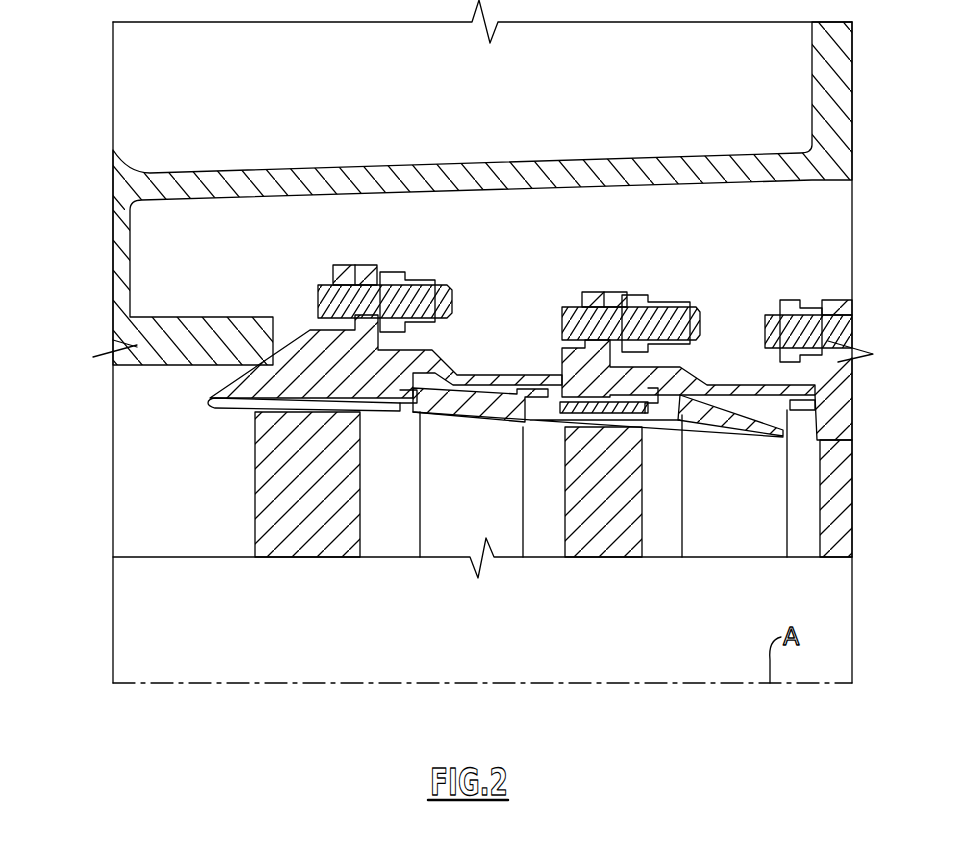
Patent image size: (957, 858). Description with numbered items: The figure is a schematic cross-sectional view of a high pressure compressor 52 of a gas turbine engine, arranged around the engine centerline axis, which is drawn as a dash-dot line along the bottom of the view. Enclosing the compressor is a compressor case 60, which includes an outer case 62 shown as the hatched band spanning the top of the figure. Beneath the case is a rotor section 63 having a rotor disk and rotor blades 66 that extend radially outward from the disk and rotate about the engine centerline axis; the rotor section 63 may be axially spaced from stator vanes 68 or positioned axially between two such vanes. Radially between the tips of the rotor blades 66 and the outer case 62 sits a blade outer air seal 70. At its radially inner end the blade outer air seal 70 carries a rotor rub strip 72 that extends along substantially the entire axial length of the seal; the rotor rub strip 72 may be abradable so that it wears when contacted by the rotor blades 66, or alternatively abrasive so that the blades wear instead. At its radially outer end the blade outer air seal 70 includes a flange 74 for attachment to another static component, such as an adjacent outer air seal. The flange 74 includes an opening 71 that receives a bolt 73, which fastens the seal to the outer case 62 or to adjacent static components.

The high pressure compressor 52 is at (96, 123).
The compressor case 60 is at (403, 146).
The outer case 62 is at (515, 190).
The rotor section 63 is at (612, 585).
The rotor blades 66 is at (620, 508).
The stator vanes 68 is at (482, 505).
The blade outer air seal 70 is at (672, 353).
The opening 71 is at (592, 300).
The rotor rub strip 72 is at (608, 417).
The bolt 73 is at (668, 325).
The flange 74 is at (597, 300).